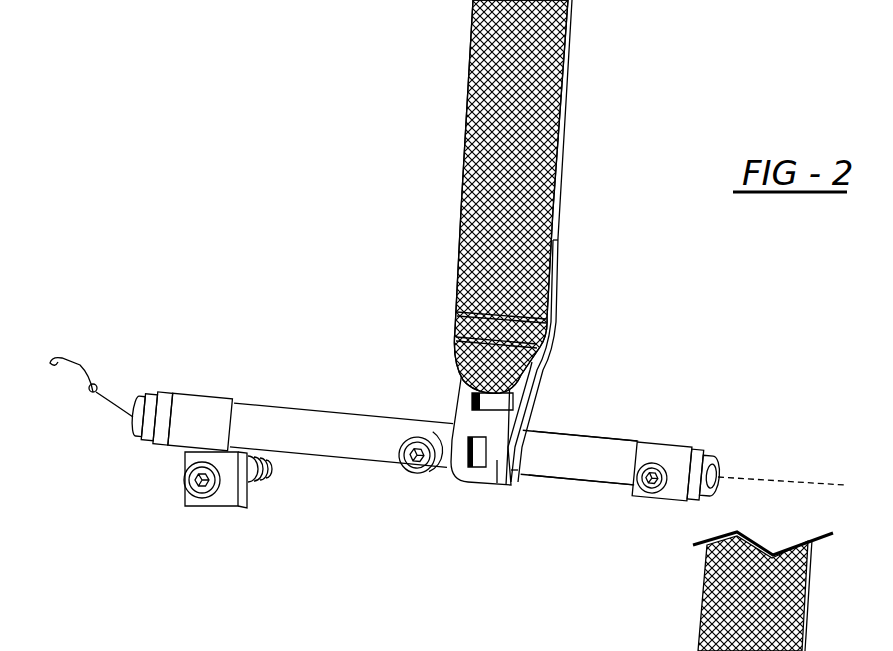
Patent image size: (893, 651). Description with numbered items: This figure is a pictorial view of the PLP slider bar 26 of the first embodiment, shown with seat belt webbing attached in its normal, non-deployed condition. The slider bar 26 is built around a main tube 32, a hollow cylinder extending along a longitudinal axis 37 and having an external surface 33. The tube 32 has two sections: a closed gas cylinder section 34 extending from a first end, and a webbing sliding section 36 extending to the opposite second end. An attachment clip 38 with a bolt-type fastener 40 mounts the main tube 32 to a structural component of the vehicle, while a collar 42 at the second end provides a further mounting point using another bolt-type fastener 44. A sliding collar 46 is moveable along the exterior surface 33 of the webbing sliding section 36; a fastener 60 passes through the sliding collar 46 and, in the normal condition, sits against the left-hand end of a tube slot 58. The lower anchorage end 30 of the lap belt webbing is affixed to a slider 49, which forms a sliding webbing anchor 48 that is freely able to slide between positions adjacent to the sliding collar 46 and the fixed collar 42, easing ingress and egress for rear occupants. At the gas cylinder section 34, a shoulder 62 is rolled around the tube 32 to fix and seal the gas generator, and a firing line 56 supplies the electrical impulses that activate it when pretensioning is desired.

The PLP slider bar 26 is at (434, 363).
The lower anchorage end 30 is at (556, 374).
The main tube 32 is at (436, 422).
The external surface 33 is at (432, 466).
The gas cylinder section 34 is at (434, 406).
The webbing sliding section 36 is at (588, 447).
The longitudinal axis 37 is at (785, 463).
The attachment clip 38 is at (172, 430).
The bolt-type fastener 40 is at (220, 500).
The collar 42 is at (668, 450).
The bolt-type fastener 44 is at (655, 495).
The sliding collar 46 is at (418, 425).
The sliding webbing anchor 48 is at (500, 478).
The slider 49 is at (465, 478).
The firing line 56 is at (90, 392).
The tube slot 58 is at (547, 478).
The fastener 60 is at (440, 478).
The shoulder 62 is at (140, 395).